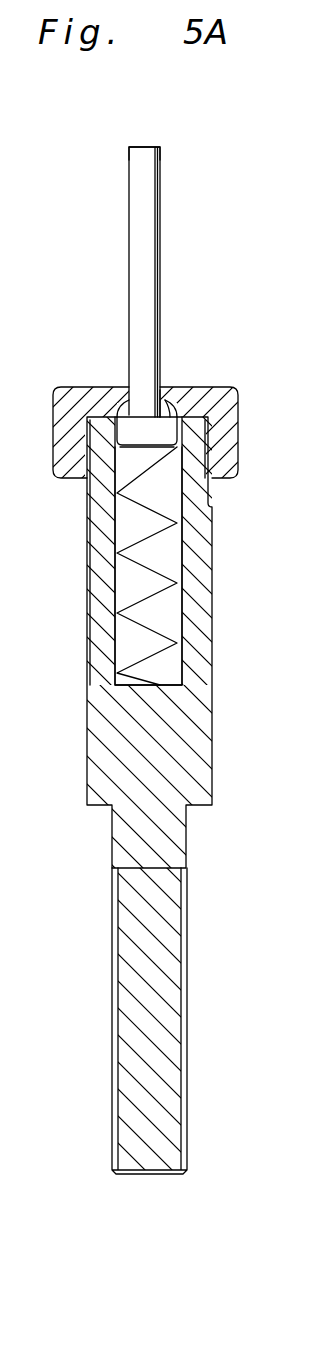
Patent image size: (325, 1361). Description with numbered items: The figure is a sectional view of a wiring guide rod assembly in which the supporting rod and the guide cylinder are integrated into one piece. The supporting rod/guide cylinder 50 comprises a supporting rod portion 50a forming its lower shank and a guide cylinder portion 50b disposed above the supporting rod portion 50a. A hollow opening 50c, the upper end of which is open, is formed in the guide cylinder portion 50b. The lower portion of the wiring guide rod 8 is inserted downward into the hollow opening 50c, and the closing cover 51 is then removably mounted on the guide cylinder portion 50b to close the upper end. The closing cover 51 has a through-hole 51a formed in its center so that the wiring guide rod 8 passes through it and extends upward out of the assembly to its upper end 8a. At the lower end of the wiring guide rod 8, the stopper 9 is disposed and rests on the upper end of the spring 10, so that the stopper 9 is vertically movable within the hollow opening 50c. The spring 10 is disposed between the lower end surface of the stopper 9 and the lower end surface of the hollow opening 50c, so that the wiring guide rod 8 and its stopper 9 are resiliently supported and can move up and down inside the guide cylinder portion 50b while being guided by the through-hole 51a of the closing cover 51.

The wiring guide rod 8 is at (155, 226).
The rod tip end 8a is at (150, 147).
The stopper 9 is at (140, 417).
The spring 10 is at (153, 564).
The supporting rod/guide cylinder 50 is at (190, 833).
The supporting rod portion 50a is at (157, 930).
The guide cylinder portion 50b is at (197, 670).
The hollow opening 50c is at (163, 611).
The closing cover 51 is at (213, 398).
The through-hole 51a is at (168, 412).